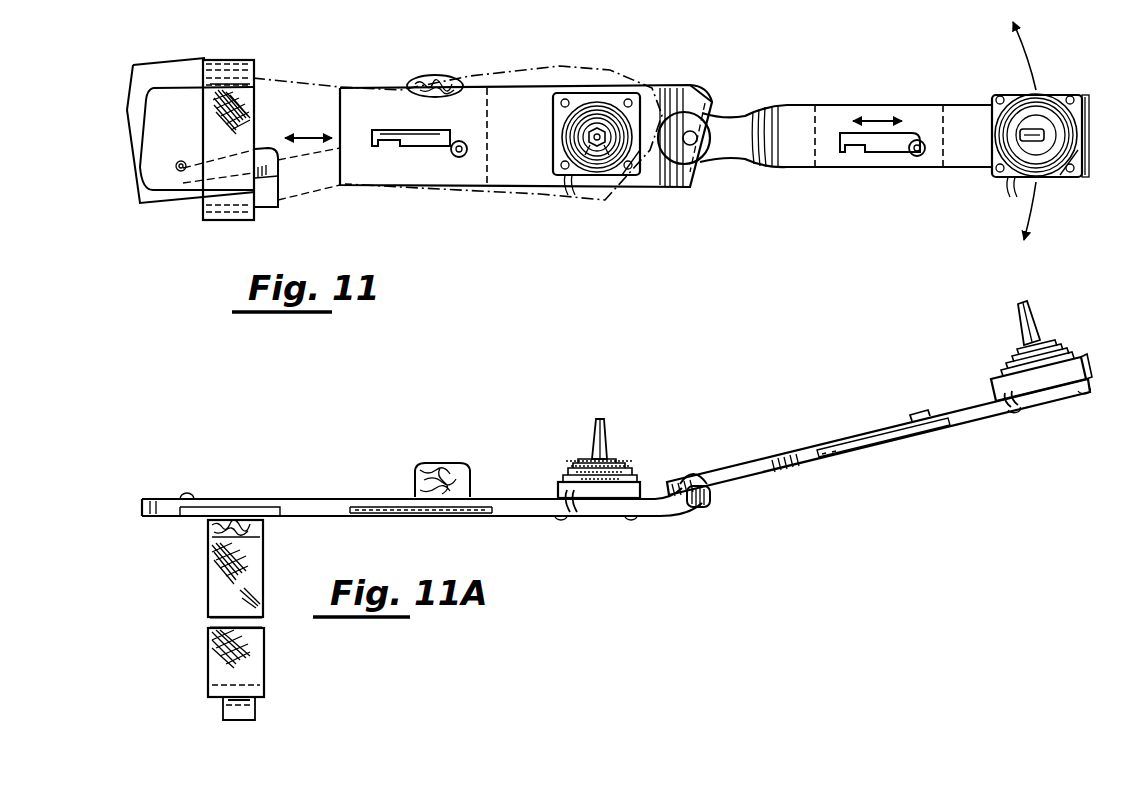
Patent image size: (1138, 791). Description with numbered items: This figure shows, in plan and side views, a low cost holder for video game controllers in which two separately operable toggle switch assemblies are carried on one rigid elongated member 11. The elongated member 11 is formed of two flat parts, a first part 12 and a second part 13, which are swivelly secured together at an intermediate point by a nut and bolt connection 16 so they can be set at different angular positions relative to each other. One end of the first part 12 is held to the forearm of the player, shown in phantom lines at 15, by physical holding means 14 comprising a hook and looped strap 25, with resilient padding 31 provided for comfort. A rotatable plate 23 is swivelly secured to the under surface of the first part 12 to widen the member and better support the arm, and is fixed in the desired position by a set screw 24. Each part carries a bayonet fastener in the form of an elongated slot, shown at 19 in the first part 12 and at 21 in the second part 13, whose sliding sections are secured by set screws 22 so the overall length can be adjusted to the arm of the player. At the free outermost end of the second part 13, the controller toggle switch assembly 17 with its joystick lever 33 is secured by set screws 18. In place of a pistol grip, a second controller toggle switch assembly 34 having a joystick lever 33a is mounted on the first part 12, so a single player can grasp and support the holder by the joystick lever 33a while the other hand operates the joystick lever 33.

In FIG. 11, the rigid elongated member 11 is at (694, 86).
In FIG. 11, the first part of elongated member 12 is at (675, 191).
In FIG. 11A, the first part of elongated member 12 is at (525, 516).
In FIG. 11, the second part of elongated member 13 is at (768, 104).
In FIG. 11A, the second part of elongated member 13 is at (745, 465).
In FIG. 11, the physical holding means 14 is at (233, 58).
In FIG. 11A, the physical holding means 14 is at (265, 650).
In FIG. 11, the forearm of player/operator 15 is at (560, 68).
In FIG. 11, the nut and bolt connection 16 is at (697, 138).
In FIG. 11A, the nut and bolt connection 16 is at (710, 498).
In FIG. 11, the controller toggle lever switch assembly 17 is at (1045, 105).
In FIG. 11A, the controller toggle lever switch assembly 17 is at (1058, 346).
In FIG. 11, the set screws 18 is at (997, 96).
In FIG. 11, the bayonet fastener 19 is at (405, 136).
In FIG. 11A, the bayonet fastener 19 is at (412, 516).
In FIG. 11, the bayonet fastener 21 is at (862, 153).
In FIG. 11A, the bayonet fastener 21 is at (858, 440).
In FIG. 11, the set screws 22 is at (468, 152).
In FIG. 11A, the set screws 22 is at (920, 413).
In FIG. 11, the rotatable plate 23 is at (273, 194).
In FIG. 11A, the rotatable plate 23 is at (272, 518).
In FIG. 11, the set screw 24 is at (178, 163).
In FIG. 11A, the set screw 24 is at (183, 496).
In FIG. 11, the hook and looped strap 25 is at (243, 92).
In FIG. 11A, the hook and looped strap 25 is at (212, 630).
In FIG. 11, the resilient padding 31 is at (427, 76).
In FIG. 11A, the resilient padding 31 is at (433, 462).
In FIG. 11, the joystick lever 33 is at (1045, 135).
In FIG. 11A, the joystick lever 33 is at (1033, 322).
In FIG. 11, the joystick lever 33a is at (590, 136).
In FIG. 11A, the joystick lever 33a is at (595, 437).
In FIG. 11, the second controller toggle switch assembly 34 is at (612, 91).
In FIG. 11A, the second controller toggle switch assembly 34 is at (628, 462).